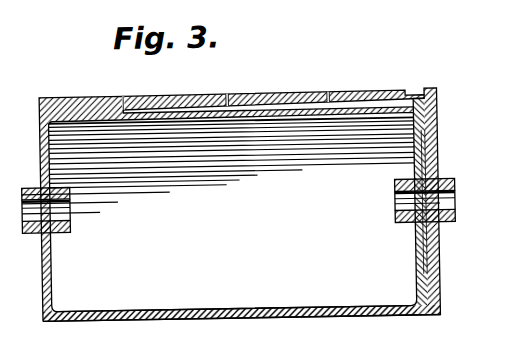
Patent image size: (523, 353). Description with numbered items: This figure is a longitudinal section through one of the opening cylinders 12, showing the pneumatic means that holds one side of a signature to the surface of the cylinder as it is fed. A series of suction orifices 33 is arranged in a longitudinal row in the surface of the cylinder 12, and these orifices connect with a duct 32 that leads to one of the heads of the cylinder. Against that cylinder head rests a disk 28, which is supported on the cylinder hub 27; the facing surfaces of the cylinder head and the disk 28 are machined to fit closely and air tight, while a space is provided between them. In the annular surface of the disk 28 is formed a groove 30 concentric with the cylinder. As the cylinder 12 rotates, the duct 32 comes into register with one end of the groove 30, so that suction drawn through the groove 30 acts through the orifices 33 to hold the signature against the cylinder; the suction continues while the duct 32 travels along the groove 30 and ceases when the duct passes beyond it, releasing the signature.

The opening cylinder 12 is at (301, 308).
The cylinder hub 27 is at (455, 187).
The disk 28 is at (438, 287).
The groove 30 is at (438, 108).
The duct 32 is at (380, 104).
The suction orifices 33 is at (124, 94).